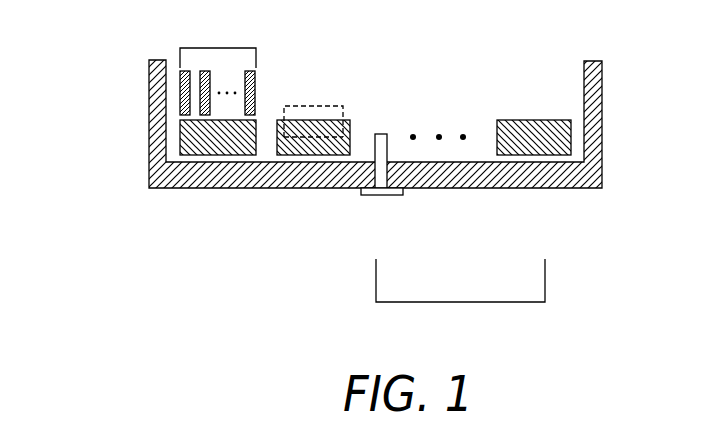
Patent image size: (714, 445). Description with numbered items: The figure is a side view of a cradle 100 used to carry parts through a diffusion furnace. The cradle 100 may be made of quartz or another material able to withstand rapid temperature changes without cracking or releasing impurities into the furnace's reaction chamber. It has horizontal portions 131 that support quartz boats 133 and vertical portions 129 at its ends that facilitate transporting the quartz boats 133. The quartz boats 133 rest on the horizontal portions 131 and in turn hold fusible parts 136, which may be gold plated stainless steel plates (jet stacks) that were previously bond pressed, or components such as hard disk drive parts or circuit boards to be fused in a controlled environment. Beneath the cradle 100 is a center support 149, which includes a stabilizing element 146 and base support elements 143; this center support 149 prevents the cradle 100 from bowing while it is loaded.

The cradle 100 is at (98, 70).
The vertical portions 129 is at (602, 128).
The horizontal portions 131 is at (545, 188).
The quartz boats 133 is at (311, 155).
The fusible parts 136 is at (219, 47).
The base support elements 143 is at (404, 194).
The stabilizing element 146 is at (388, 152).
The center support 149 is at (465, 302).